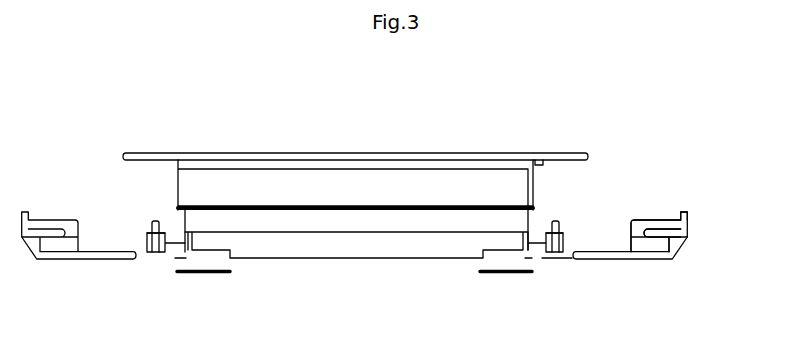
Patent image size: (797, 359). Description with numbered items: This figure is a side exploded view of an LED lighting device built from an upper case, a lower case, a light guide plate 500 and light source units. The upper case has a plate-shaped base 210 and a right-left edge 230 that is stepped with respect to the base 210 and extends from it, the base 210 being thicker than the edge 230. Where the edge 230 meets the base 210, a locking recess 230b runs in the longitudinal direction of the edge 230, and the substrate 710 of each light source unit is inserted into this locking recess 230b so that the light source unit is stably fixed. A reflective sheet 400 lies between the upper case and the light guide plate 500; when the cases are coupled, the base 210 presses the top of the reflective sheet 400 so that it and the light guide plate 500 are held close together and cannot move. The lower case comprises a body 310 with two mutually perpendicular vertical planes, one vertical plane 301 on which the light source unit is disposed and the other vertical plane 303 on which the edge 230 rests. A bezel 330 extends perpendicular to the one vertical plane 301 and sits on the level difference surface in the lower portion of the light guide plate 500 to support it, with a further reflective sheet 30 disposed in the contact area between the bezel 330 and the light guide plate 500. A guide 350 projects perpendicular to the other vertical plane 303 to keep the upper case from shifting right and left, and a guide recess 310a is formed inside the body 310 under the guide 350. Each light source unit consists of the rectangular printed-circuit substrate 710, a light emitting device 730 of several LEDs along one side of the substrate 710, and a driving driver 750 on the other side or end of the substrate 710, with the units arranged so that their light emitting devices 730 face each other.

The base 210 is at (278, 153).
The edge 230 is at (399, 173).
The locking recess 230b is at (537, 157).
The reflective sheet 400 is at (178, 208).
The light guide plate 500 is at (360, 259).
The reflective sheet 30 is at (217, 273).
The substrate 710 is at (156, 252).
The light emitting device 730 is at (163, 252).
The driving driver 750 is at (148, 252).
The bezel 330 is at (62, 259).
The body 310 is at (699, 247).
The one vertical plane 301 is at (643, 259).
The other vertical plane 303 is at (656, 229).
The guide recess 310a is at (682, 233).
The guide 350 is at (682, 212).